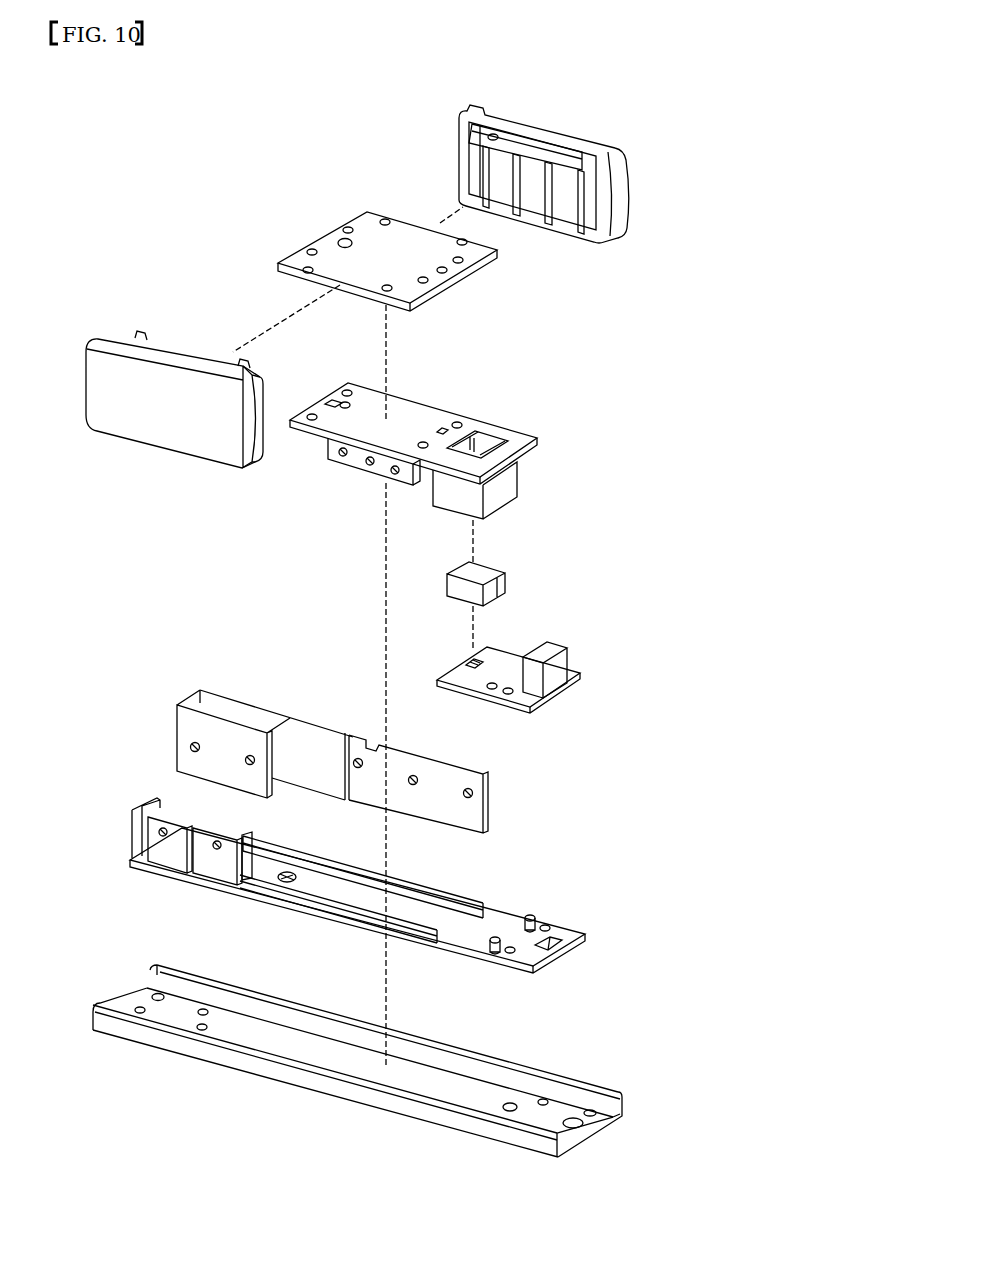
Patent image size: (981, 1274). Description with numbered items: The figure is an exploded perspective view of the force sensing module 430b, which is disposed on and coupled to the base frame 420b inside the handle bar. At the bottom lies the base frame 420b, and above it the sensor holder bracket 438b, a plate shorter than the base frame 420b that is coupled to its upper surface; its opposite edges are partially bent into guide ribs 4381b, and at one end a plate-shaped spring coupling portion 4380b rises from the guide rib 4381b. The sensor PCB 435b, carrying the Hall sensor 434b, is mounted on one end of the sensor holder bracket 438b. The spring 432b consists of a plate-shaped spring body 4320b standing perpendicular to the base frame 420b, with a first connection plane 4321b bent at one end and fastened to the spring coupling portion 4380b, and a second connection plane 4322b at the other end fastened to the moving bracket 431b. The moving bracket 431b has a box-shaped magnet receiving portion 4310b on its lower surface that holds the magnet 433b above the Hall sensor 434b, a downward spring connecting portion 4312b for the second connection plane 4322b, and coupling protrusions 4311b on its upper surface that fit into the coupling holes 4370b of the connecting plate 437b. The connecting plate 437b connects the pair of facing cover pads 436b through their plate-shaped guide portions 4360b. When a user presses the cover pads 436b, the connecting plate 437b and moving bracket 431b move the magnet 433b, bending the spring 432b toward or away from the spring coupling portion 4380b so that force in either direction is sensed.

The force sensing module 430b is at (116, 137).
The base frame 420b is at (577, 1067).
The moving bracket 431b is at (440, 453).
The magnet receiving portion 4310b is at (518, 468).
The coupling protrusions 4311b is at (342, 408).
The spring connecting portion 4312b is at (357, 461).
The spring 432b is at (310, 715).
The spring body 4320b is at (272, 723).
The first connection plane 4321b is at (187, 728).
The second connection plane 4322b is at (394, 736).
The magnet 433b is at (500, 581).
The Hall sensor 434b is at (477, 660).
The sensor PCB 435b is at (517, 690).
The cover pads 436b is at (386, 283).
The guide portion 4360b is at (533, 143).
The connecting plate 437b is at (338, 245).
The coupling holes 4370b is at (340, 244).
The sensor holder bracket 438b is at (368, 890).
The spring coupling portion 4380b is at (170, 853).
The guide ribs 4381b is at (373, 876).